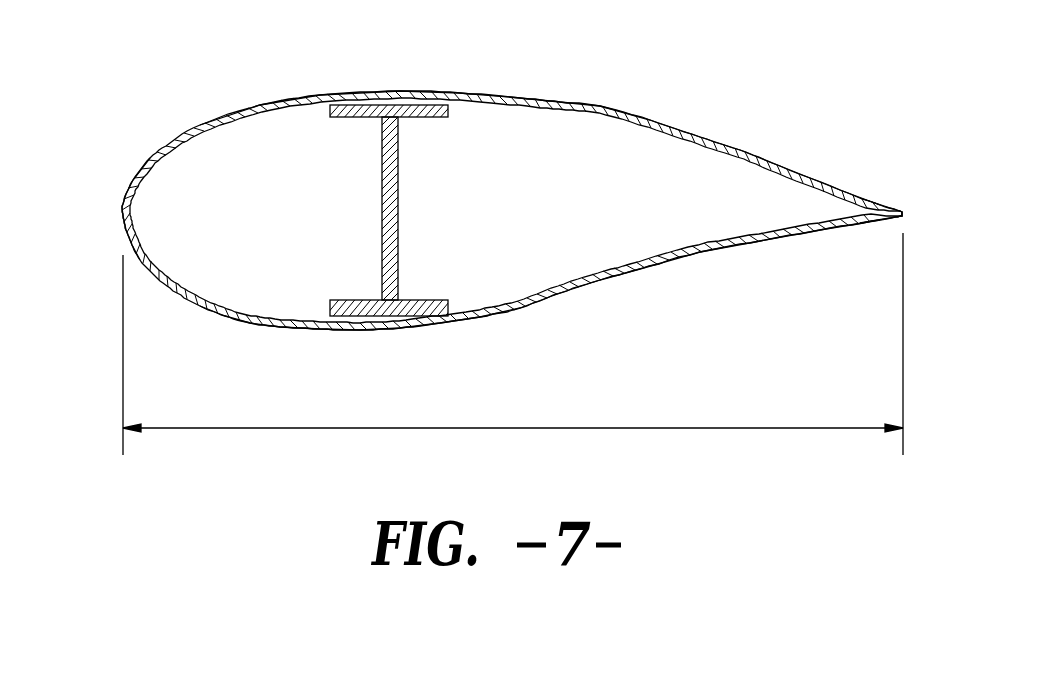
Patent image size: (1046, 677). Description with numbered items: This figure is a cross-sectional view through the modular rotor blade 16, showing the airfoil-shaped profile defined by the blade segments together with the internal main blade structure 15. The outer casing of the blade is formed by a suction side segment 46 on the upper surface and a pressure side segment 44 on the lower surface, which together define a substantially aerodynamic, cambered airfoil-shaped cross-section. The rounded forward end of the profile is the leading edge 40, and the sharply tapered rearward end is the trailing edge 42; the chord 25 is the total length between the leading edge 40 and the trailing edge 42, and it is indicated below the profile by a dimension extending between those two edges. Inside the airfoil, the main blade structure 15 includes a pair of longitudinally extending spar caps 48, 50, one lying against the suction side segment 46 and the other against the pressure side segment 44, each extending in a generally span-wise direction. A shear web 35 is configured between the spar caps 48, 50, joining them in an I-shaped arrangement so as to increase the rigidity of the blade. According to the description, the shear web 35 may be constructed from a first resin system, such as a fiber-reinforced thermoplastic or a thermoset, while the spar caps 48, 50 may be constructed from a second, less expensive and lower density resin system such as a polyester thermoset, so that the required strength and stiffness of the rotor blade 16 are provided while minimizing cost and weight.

The modular rotor blade 16 is at (735, 84).
The suction side segment 46 is at (553, 98).
The pressure side segment 44 is at (628, 270).
The leading edge 40 is at (124, 200).
The trailing edge 42 is at (885, 197).
The main blade structure 15 is at (400, 211).
The shear web 35 is at (380, 212).
The spar cap 50 is at (415, 118).
The spar cap 48 is at (417, 298).
The chord 25 is at (672, 430).